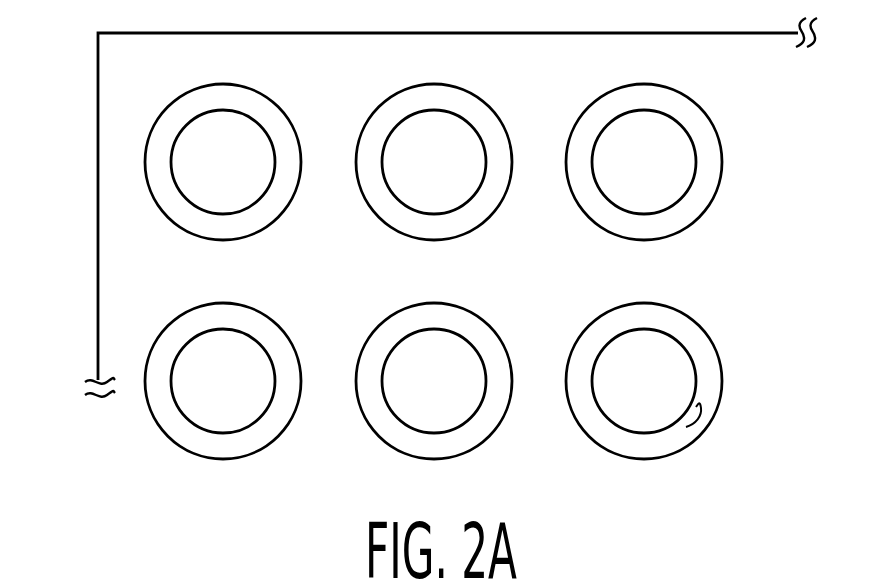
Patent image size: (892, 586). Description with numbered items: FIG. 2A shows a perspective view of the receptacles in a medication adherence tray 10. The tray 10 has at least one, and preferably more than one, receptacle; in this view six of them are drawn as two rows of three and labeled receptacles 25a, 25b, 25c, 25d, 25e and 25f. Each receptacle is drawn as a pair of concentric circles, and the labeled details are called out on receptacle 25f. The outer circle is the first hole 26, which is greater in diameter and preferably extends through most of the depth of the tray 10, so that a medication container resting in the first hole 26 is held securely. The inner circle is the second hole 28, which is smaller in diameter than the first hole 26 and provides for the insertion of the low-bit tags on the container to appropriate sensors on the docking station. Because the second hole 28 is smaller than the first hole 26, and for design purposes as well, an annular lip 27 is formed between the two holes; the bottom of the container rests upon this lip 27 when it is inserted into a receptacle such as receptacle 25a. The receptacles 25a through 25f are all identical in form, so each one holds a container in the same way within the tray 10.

The tray 10 is at (97, 235).
The receptacle 25a is at (267, 98).
The receptacle 25b is at (480, 97).
The receptacle 25c is at (688, 98).
The receptacle 25d is at (270, 317).
The receptacle 25e is at (475, 313).
The receptacle 25f is at (684, 392).
The first hole 26 is at (720, 378).
The lip 27 is at (702, 411).
The second hole 28 is at (665, 427).